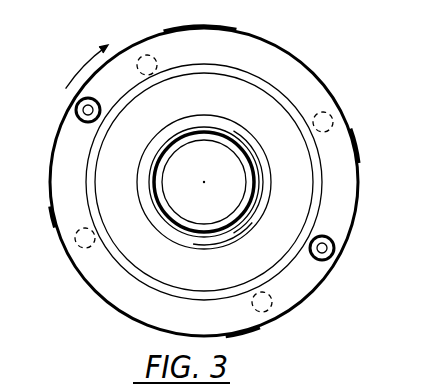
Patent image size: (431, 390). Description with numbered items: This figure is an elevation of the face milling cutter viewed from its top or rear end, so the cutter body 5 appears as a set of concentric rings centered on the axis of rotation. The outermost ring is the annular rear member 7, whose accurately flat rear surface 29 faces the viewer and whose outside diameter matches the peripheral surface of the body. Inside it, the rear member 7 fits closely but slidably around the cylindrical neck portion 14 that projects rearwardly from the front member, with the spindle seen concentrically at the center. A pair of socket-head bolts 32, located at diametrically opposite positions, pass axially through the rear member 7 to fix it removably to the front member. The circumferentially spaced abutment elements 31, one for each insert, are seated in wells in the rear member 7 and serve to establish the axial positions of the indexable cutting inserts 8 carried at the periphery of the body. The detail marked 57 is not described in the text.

The cutter body 5 is at (206, 131).
The annular rear member 7 is at (355, 222).
The indexable cutting inserts 8 is at (178, 29).
The cylindrical neck portion 14 is at (267, 82).
The rear surface 29 is at (255, 45).
The abutment elements 31 is at (143, 53).
The socket-head bolts 32 is at (75, 109).
The hub groove 57 is at (257, 126).